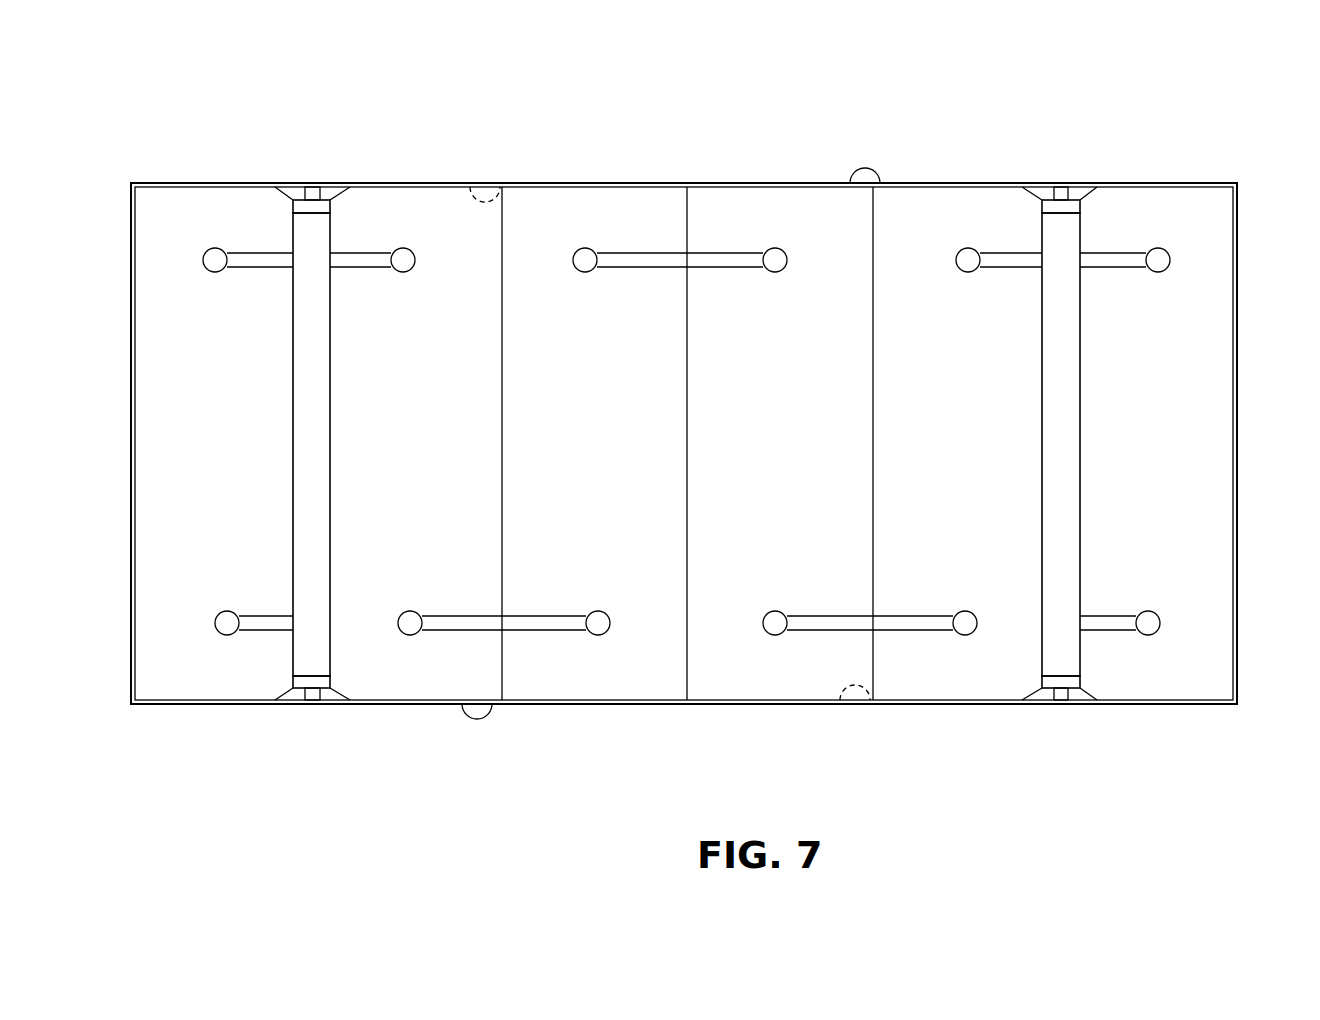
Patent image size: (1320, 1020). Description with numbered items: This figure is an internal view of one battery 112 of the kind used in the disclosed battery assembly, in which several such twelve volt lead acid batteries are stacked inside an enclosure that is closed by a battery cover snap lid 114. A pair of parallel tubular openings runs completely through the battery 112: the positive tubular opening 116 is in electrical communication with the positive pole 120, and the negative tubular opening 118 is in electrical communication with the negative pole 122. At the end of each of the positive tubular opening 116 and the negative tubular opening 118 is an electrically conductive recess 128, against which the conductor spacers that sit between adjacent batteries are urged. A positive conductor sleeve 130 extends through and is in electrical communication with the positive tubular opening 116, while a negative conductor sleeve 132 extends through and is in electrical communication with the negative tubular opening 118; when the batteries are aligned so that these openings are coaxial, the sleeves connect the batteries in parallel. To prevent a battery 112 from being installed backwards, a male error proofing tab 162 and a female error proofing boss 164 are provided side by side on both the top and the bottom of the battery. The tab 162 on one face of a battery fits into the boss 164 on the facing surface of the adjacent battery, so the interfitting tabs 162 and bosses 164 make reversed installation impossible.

The battery 112 is at (1033, 110).
The battery cover snap lid 114 is at (478, 232).
The positive tubular opening 116 is at (305, 190).
The negative tubular opening 118 is at (1060, 195).
The positive pole 120 is at (258, 630).
The negative pole 122 is at (1115, 615).
The electrically conductive recess 128 is at (325, 185).
The positive conductor sleeve 130 is at (332, 650).
The negative conductor sleeve 132 is at (1040, 635).
The male error proofing tab 162 is at (865, 178).
The female error proofing boss 164 is at (487, 200).